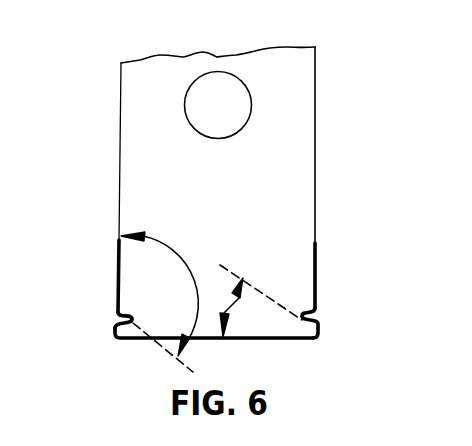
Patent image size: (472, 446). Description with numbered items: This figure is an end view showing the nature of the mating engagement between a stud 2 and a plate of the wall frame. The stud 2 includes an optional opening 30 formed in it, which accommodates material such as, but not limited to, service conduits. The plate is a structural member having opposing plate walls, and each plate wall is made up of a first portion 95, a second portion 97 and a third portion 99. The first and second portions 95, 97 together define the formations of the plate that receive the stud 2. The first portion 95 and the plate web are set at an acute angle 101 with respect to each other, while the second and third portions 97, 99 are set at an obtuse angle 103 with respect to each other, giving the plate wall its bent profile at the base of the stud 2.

The stud 2 is at (224, 211).
The opening 30 is at (238, 101).
The first portion 95 is at (111, 322).
The second portion 97 is at (116, 317).
The third portion 99 is at (114, 281).
The acute angle 101 is at (227, 306).
The obtuse angle 103 is at (165, 243).